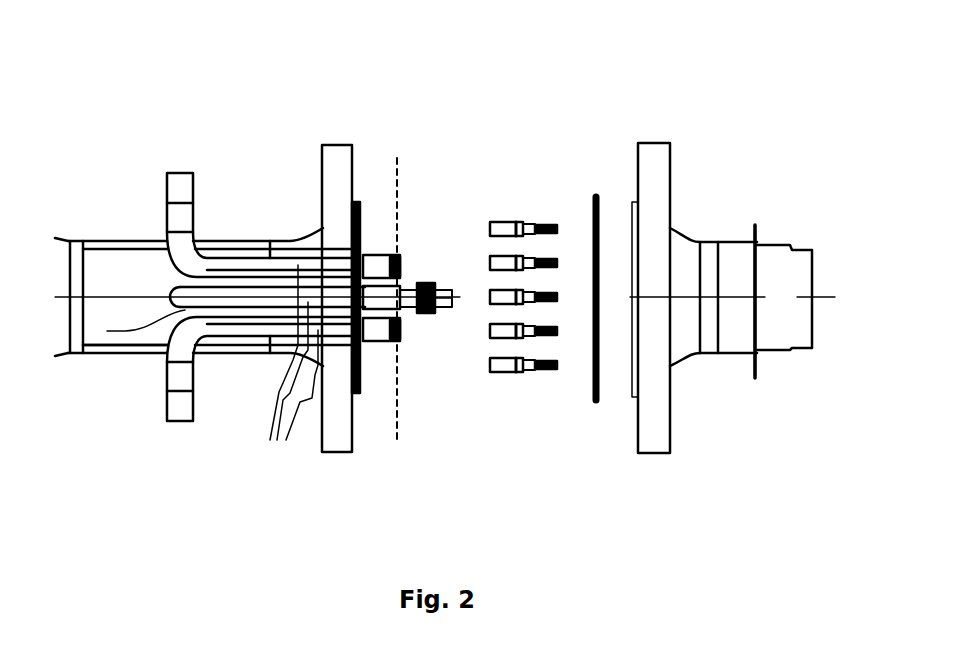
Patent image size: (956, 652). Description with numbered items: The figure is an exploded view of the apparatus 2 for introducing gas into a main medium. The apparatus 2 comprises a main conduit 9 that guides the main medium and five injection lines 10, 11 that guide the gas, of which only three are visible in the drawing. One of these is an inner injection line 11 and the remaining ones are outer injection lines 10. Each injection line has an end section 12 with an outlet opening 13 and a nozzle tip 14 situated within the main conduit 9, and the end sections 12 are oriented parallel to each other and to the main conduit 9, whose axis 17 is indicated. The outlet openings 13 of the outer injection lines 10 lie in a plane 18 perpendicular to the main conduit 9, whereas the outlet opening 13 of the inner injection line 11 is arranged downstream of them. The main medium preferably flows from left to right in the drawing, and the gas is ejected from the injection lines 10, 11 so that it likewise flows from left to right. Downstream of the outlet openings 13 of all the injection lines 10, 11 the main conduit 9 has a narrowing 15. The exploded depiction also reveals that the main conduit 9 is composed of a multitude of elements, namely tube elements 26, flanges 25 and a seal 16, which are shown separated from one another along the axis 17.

The apparatus 2 is at (758, 105).
The main conduit 9 is at (733, 240).
The outer injection lines 10 is at (197, 192).
The inner injection line 11 is at (107, 331).
The end section 12 is at (289, 372).
The outlet opening 13 is at (400, 267).
The nozzle tip 14 is at (490, 226).
The narrowing 15 is at (683, 365).
The seal 16 is at (597, 197).
The axis 17 is at (145, 298).
The plane 18 is at (398, 440).
The flanges 25 is at (327, 452).
The tube elements 26 is at (143, 355).